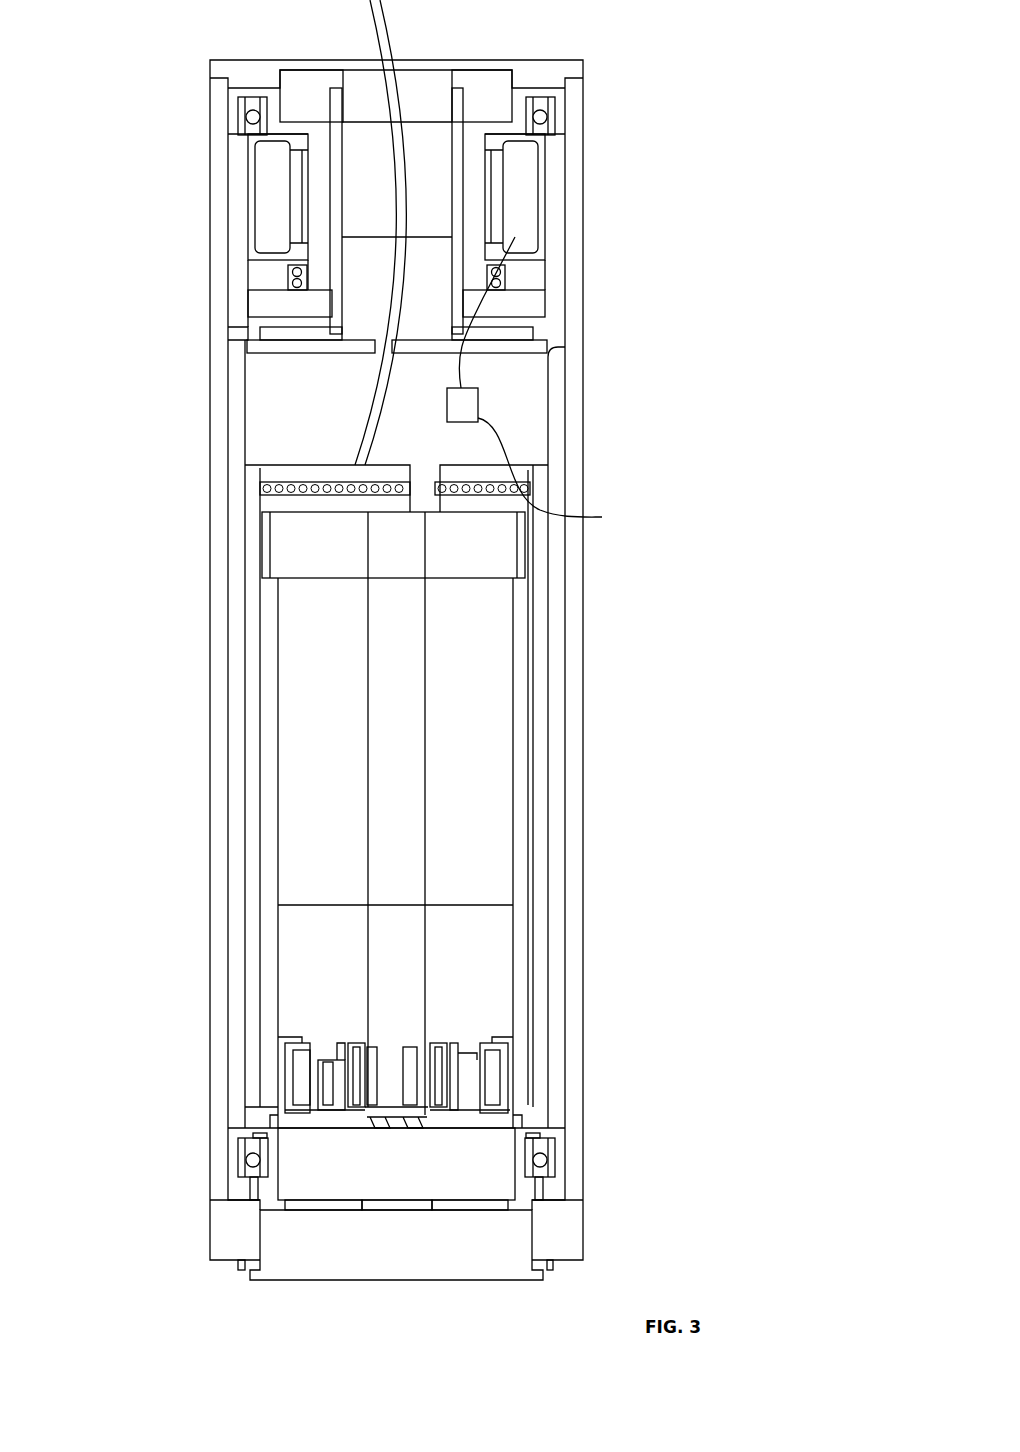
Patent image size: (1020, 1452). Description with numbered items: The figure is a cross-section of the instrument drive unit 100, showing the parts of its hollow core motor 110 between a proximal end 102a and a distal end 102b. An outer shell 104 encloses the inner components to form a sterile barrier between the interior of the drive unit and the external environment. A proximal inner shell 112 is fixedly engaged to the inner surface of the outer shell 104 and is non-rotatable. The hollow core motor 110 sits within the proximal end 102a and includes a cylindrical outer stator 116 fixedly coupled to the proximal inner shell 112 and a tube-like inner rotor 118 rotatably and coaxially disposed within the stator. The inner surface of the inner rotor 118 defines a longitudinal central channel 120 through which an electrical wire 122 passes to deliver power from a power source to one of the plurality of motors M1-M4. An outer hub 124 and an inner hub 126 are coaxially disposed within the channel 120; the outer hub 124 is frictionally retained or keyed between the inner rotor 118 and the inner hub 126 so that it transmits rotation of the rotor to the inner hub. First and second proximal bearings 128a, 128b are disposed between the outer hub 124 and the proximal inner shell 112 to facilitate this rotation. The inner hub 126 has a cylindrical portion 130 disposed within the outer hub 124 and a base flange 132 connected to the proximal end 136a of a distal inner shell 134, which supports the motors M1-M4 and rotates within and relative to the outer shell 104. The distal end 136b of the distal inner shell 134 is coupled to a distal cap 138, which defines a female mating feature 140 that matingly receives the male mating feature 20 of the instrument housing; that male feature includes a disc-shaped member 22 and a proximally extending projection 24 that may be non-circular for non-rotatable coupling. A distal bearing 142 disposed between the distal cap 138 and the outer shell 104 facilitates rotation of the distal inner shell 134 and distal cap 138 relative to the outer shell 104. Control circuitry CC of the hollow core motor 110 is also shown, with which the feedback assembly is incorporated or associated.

The instrument drive unit 100 is at (589, 70).
The proximal end 102a is at (589, 76).
The distal end 102b is at (199, 1172).
The outer shell 104 is at (572, 155).
The hollow core motor 110 is at (408, 208).
The proximal inner shell 112 is at (240, 188).
The outer stator 116 is at (258, 229).
The inner rotor 118 is at (300, 227).
The longitudinal central channel 120 is at (364, 145).
The electrical wire 122 is at (363, 440).
The outer hub 124 is at (322, 147).
The inner hub 126 is at (467, 300).
The first proximal bearing 128a is at (538, 103).
The second proximal bearing 128b is at (507, 271).
The cylindrical portion 130 is at (457, 137).
The base flange 132 is at (557, 335).
The distal inner shell 134 is at (561, 451).
The proximal end of distal inner shell 136a is at (557, 358).
The distal end of distal inner shell 136b is at (558, 1108).
The distal cap 138 is at (573, 1213).
The female mating feature 140 is at (295, 1210).
The distal bearing 142 is at (558, 1160).
The male mating feature 20 is at (241, 1267).
The disc-shaped member 22 is at (553, 1270).
The projection 24 is at (518, 1228).
The control circuitry CC is at (544, 458).
The plurality of motors M1-M4 is at (500, 940).